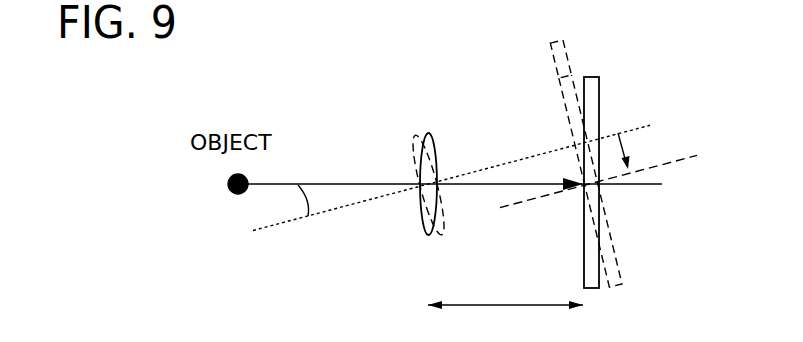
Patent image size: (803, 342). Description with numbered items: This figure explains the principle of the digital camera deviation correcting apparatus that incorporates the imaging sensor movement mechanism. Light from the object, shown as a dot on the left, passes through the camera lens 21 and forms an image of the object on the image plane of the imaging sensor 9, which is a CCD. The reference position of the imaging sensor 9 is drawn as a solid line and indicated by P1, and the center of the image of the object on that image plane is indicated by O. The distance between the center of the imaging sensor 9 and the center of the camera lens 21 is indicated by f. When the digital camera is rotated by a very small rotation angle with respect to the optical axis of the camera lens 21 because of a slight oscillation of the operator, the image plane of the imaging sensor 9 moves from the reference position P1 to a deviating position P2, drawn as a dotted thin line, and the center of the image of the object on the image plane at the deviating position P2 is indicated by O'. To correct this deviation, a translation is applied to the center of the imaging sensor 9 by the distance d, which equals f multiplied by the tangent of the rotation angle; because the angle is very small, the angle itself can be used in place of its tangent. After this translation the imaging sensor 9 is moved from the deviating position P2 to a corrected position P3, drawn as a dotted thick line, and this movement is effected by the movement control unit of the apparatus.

The imaging sensor 9 is at (616, 157).
The camera lens 21 is at (428, 236).
The reference position P1 is at (599, 105).
The deviating position P2 is at (552, 58).
The corrected position P3 is at (617, 286).
The center of the image of the object O is at (598, 191).
The center of the image of the object at the deviating position O' is at (451, 156).
The distance d is at (634, 150).
The distance between the center of the imaging sensor and the center of the camera l f is at (505, 293).